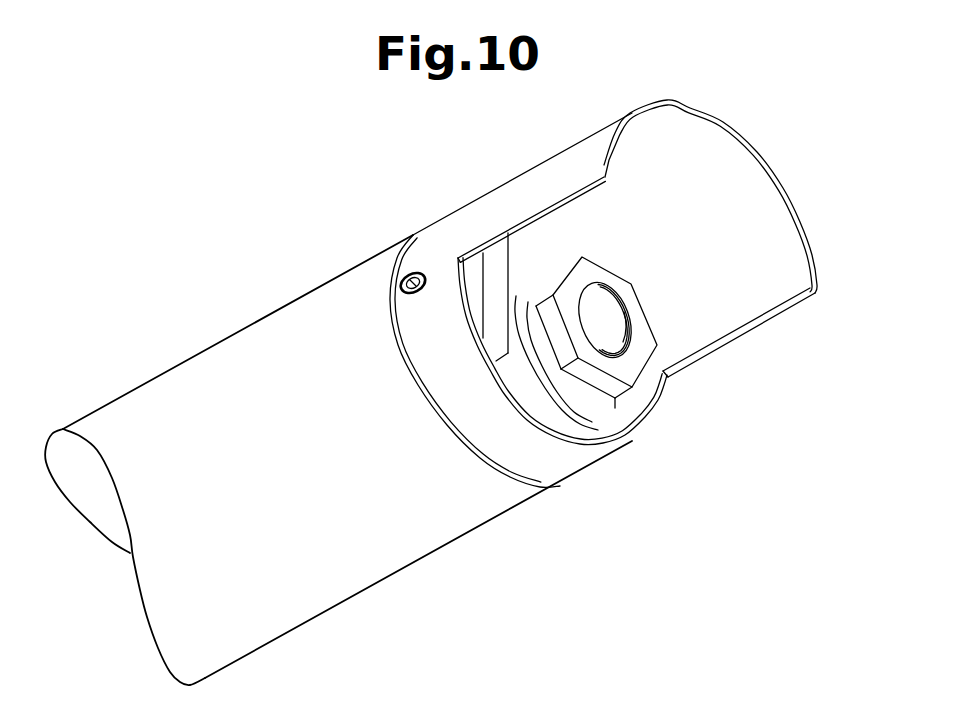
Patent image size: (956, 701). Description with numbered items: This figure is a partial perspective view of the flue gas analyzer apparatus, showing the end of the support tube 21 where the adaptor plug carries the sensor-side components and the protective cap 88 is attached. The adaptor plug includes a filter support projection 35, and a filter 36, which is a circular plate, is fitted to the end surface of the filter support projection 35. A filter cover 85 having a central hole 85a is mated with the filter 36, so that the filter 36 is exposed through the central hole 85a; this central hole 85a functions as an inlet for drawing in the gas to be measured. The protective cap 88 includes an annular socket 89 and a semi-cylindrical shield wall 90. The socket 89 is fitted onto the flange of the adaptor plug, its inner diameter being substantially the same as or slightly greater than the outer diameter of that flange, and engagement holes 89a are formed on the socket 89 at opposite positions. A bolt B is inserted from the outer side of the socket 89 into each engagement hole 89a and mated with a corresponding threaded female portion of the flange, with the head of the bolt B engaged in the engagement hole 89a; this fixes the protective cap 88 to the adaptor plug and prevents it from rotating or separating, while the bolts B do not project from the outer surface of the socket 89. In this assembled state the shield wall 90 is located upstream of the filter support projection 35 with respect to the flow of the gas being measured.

The support tube 21 is at (288, 322).
The filter support projection 35 is at (537, 360).
The filter 36 is at (617, 337).
The filter cover 85 is at (620, 308).
The central hole 85a is at (615, 307).
The protective cap 88 is at (480, 195).
The socket 89 is at (591, 452).
The engagement hole 89a is at (427, 288).
The shield wall 90 is at (580, 160).
The bolt B is at (405, 268).